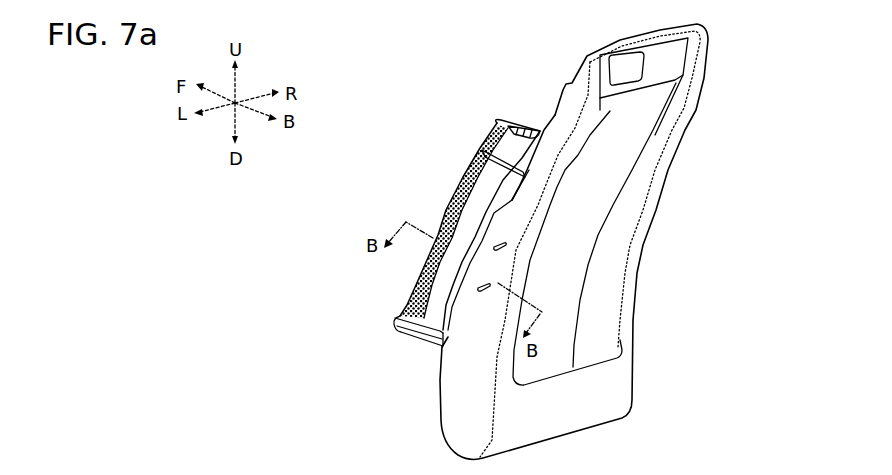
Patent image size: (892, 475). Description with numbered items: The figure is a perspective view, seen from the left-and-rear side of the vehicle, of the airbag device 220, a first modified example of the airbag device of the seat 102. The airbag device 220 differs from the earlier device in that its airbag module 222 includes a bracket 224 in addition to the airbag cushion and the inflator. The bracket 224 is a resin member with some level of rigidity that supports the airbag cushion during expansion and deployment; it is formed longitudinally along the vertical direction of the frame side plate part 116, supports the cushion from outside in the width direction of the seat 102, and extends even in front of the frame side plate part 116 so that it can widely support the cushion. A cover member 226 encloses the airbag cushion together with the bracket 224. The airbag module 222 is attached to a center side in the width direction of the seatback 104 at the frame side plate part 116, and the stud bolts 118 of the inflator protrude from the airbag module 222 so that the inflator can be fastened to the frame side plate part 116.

The seat 102 is at (710, 32).
The seatback 104 is at (698, 92).
The frame side plate part 116 is at (536, 181).
The stud bolts 118 is at (507, 249).
The airbag device 220 is at (462, 176).
The airbag module 222 is at (473, 167).
The bracket 224 is at (513, 135).
The cover member 226 is at (452, 205).